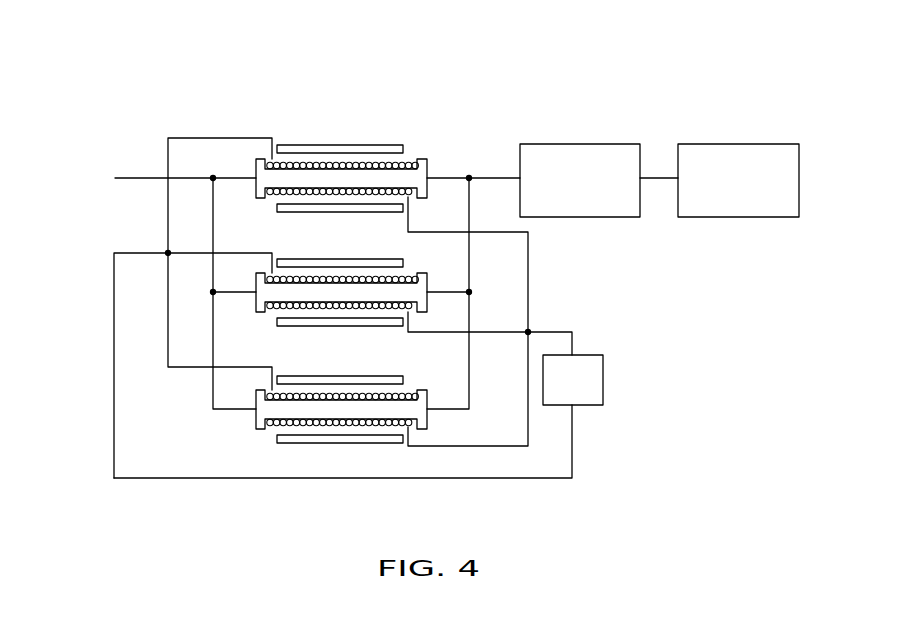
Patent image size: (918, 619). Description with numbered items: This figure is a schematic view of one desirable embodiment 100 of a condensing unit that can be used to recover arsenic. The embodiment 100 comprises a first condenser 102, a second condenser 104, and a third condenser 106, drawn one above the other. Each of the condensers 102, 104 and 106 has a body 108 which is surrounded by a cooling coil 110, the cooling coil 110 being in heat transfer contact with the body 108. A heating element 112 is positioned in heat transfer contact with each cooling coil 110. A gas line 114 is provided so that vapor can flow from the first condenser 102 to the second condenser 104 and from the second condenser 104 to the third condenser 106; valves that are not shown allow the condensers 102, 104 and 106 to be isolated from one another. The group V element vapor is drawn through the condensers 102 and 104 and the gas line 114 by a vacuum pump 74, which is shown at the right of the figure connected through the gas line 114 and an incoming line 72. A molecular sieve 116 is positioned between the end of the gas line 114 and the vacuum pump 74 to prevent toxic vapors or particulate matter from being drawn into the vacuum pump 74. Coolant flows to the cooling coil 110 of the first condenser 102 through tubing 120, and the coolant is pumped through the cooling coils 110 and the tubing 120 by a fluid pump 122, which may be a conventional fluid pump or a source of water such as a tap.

The embodiment of the condensing unit 100 is at (164, 105).
The input conductor 72 is at (142, 177).
The first condenser 102 is at (428, 165).
The second condenser 104 is at (427, 285).
The third condenser 106 is at (428, 421).
The body 108 is at (257, 163).
The cooling coil 110 is at (360, 165).
The heating element 112 is at (312, 213).
The gas line 114 is at (470, 312).
The molecular sieve 116 is at (569, 144).
The vacuum pump 74 is at (728, 144).
The tubing 120 is at (572, 460).
The fluid pump 122 is at (603, 383).